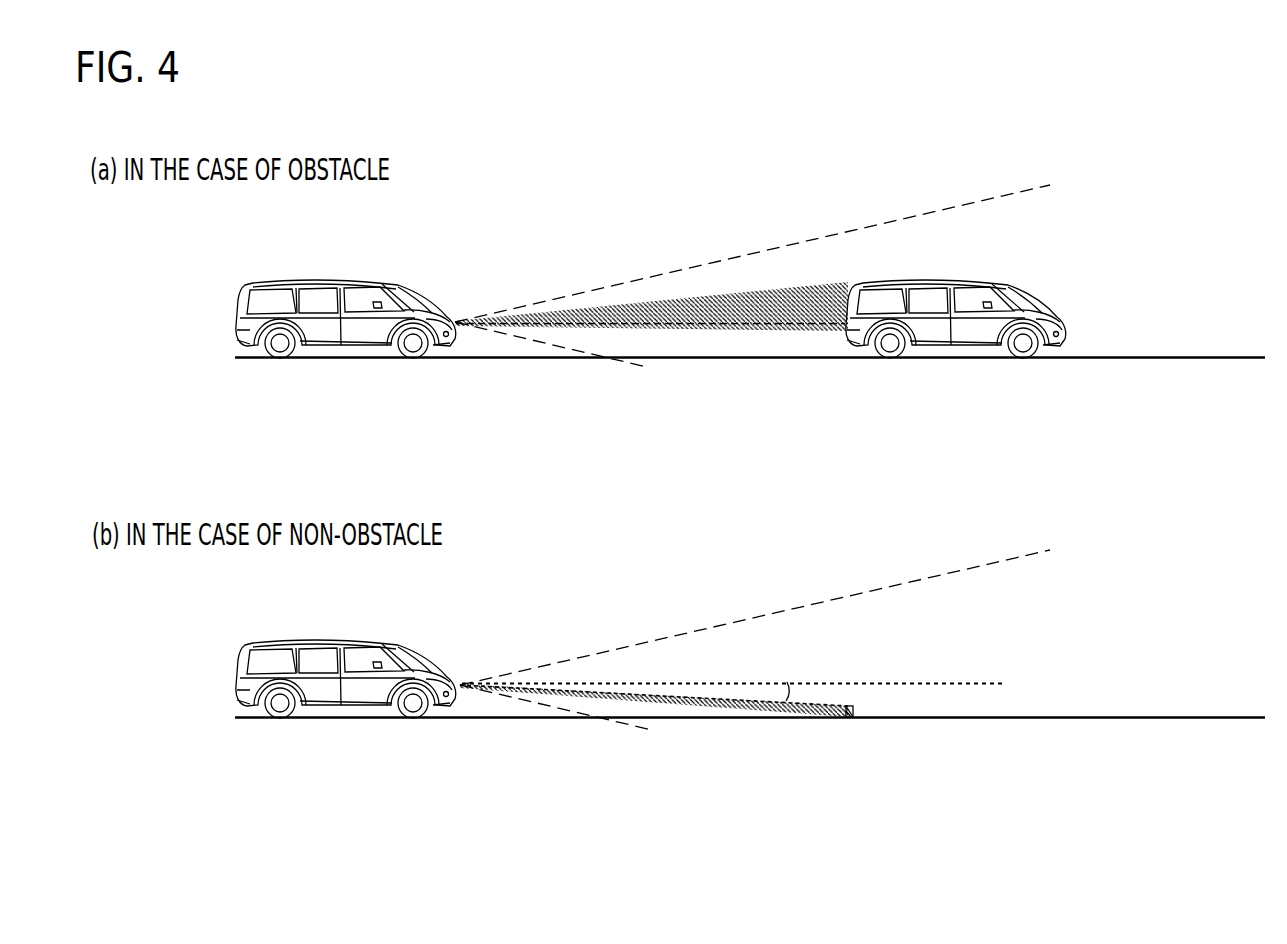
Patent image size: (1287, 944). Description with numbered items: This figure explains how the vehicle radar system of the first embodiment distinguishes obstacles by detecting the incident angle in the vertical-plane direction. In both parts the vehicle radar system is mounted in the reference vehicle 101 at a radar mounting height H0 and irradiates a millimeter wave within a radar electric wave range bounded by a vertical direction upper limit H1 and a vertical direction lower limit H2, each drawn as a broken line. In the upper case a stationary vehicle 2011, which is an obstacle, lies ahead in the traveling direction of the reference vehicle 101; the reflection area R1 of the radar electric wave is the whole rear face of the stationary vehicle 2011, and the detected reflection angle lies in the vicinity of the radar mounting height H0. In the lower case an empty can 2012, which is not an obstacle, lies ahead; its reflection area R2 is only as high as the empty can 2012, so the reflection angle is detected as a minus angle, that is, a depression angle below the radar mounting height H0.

The reference vehicle 101 is at (334, 283).
The stationary vehicle 2011 is at (924, 283).
The empty can 2012 is at (850, 712).
The reflection area R1 is at (684, 300).
The reflection area R2 is at (738, 703).
The radar mounting height H0 is at (768, 330).
The vertical direction upper limit H1 is at (793, 245).
The vertical direction lower limit H2 is at (540, 345).